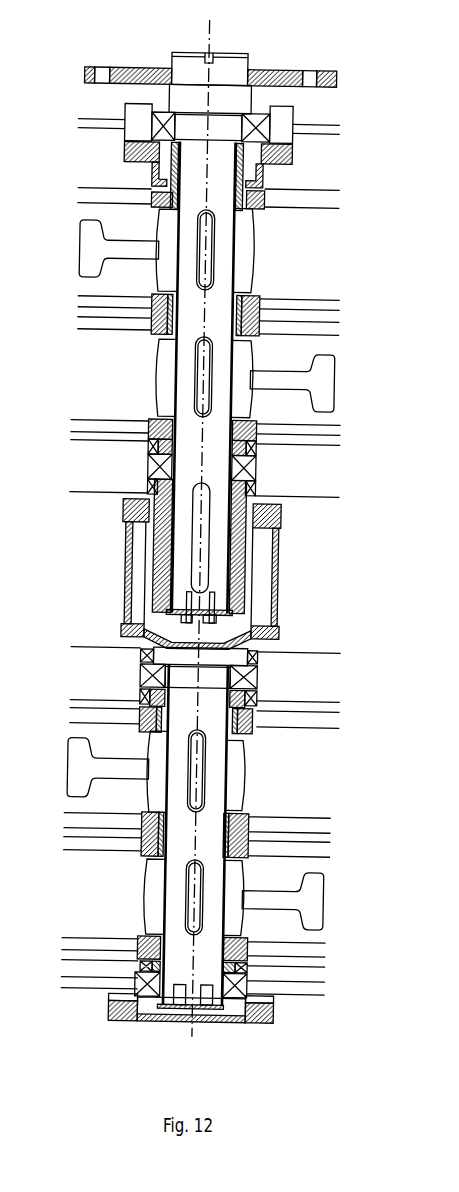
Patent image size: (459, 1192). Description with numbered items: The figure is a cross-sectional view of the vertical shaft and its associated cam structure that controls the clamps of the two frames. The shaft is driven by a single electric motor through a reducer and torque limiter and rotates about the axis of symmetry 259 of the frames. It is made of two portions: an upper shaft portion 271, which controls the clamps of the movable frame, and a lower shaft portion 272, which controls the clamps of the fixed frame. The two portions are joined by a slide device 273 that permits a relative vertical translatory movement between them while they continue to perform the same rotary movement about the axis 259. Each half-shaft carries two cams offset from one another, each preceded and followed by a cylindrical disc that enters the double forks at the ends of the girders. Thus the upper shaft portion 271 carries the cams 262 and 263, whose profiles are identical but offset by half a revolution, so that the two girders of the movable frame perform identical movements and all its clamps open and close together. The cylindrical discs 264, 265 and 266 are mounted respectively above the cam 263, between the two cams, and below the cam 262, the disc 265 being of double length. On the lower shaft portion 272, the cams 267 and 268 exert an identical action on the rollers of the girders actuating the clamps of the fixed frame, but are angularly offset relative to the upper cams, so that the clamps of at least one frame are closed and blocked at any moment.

The axis of symmetry 259 is at (214, 40).
The cam 262 is at (332, 388).
The cam 263 is at (90, 257).
The cylindrical disc 264 is at (264, 195).
The cylindrical disc 265 is at (265, 327).
The cylindrical disc 266 is at (265, 434).
The cam 267 is at (323, 886).
The cam 268 is at (91, 762).
The shaft portion 271 is at (235, 270).
The shaft portion 272 is at (231, 785).
The slide device 273 is at (247, 577).